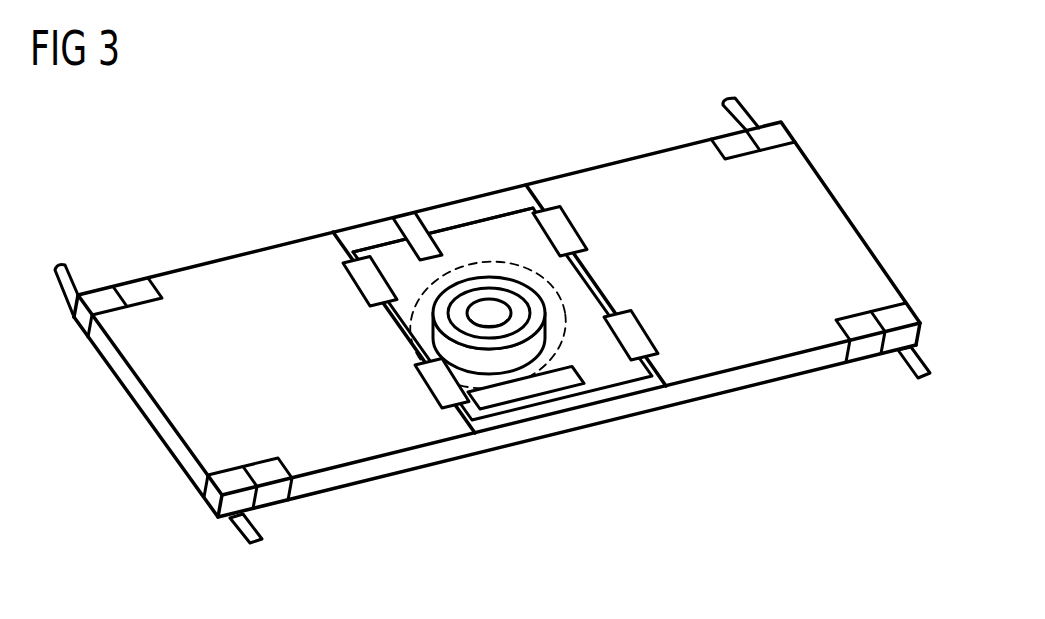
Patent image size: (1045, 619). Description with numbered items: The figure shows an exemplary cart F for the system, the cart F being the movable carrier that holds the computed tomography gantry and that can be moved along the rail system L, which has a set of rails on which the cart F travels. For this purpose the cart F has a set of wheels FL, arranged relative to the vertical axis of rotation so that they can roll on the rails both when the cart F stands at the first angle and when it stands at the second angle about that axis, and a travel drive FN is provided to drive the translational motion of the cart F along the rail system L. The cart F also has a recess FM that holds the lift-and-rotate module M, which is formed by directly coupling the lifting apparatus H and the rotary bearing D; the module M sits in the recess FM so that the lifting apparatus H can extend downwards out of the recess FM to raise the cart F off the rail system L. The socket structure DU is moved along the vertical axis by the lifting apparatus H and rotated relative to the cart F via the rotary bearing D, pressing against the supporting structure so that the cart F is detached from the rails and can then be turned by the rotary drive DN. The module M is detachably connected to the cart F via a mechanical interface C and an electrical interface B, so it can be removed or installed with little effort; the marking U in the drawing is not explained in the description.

The cart F is at (260, 297).
The travel drive FN is at (135, 293).
The set of wheels FL is at (100, 293).
The rail system L is at (67, 290).
The mechanical interface C is at (432, 378).
The electrical interface B is at (405, 223).
The recess FM is at (360, 235).
The rotary bearing D is at (440, 228).
The socket structure DU is at (473, 292).
The rotary drive DN is at (493, 270).
The lifting apparatus H is at (558, 385).
The lift-and-rotate module M is at (618, 362).
The underside direction U is at (422, 577).